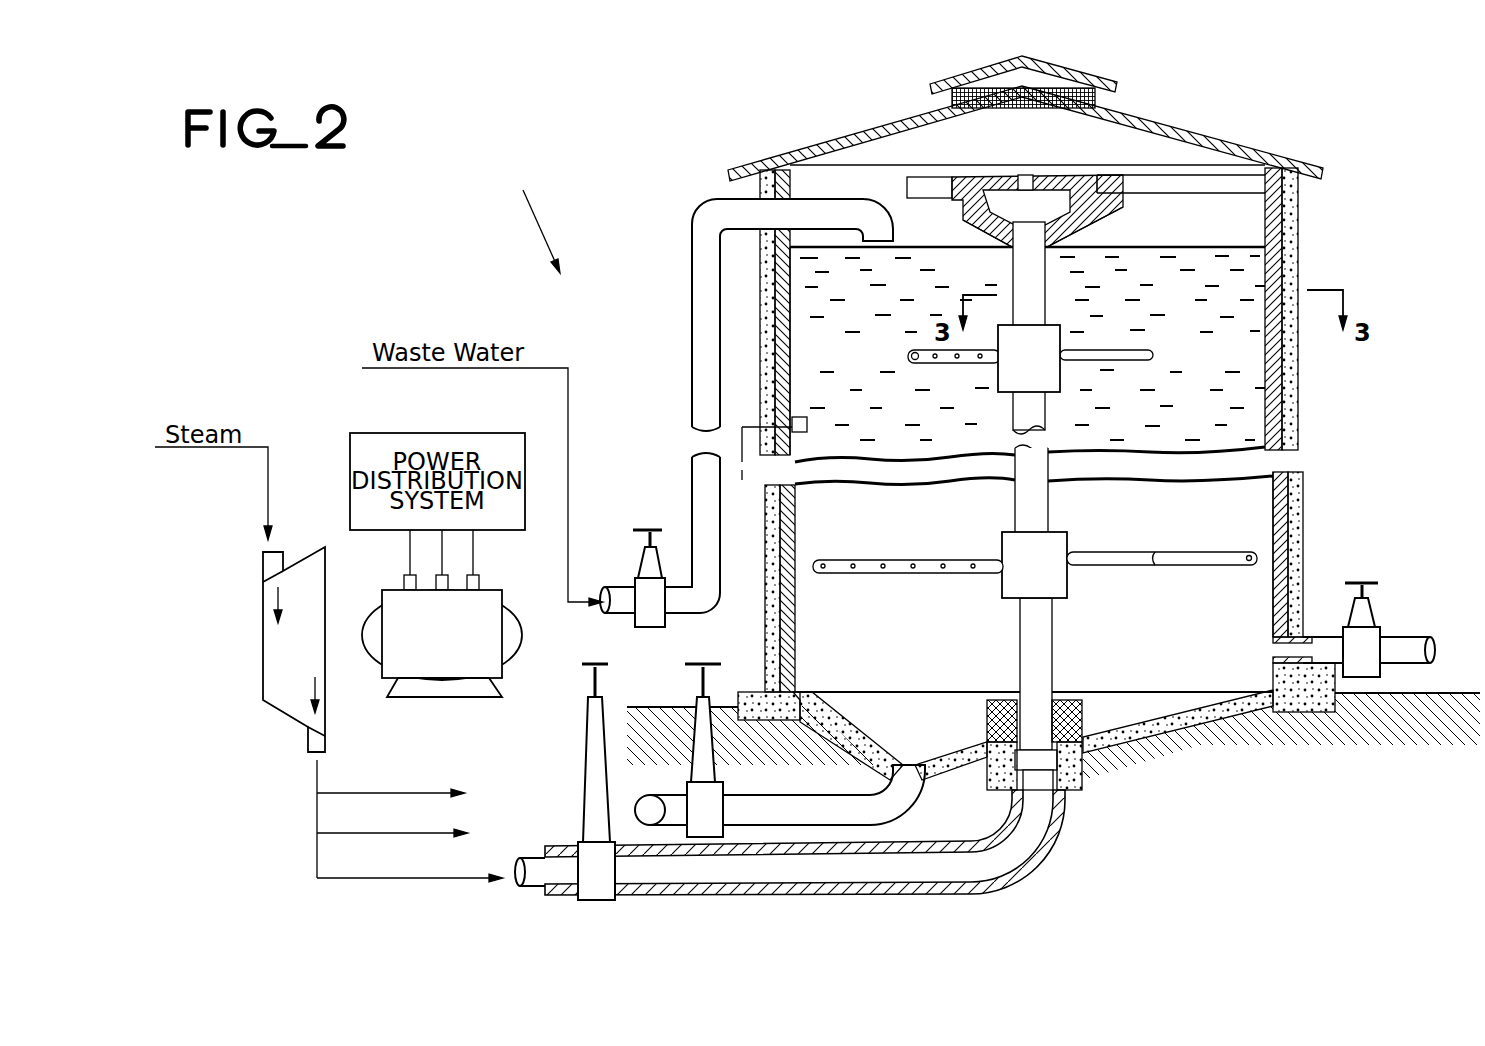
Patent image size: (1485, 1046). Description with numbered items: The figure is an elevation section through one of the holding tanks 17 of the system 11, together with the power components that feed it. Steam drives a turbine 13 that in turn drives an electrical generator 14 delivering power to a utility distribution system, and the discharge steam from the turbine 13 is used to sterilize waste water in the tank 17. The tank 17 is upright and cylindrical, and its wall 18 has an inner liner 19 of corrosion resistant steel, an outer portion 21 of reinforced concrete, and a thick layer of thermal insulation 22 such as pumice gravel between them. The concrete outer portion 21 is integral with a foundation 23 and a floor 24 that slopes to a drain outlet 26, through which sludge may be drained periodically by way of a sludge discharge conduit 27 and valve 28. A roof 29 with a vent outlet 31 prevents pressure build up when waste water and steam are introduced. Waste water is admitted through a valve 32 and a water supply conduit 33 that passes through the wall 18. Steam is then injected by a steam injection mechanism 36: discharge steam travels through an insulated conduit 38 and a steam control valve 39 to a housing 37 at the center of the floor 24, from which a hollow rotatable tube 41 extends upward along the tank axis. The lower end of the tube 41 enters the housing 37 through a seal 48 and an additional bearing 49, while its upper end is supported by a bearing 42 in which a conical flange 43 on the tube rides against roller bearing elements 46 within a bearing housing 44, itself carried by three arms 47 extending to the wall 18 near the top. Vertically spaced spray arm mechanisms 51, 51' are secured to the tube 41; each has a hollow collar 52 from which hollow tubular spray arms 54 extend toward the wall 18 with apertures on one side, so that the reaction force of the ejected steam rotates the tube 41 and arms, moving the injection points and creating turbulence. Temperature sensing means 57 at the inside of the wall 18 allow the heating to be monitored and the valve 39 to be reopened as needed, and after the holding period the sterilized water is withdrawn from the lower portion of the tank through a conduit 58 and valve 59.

The system 11 is at (537, 219).
The turbine 13 is at (263, 640).
The electrical generator 14 is at (446, 651).
The holding tank 17 is at (1040, 430).
The wall 18 is at (1298, 437).
The inner liner 19 is at (932, 250).
The outer portion 21 is at (1305, 515).
The thermal insulation 22 is at (1278, 505).
The foundation 23 is at (750, 692).
The floor 24 is at (1183, 733).
The drain outlet 26 is at (897, 767).
The sludge discharge conduit 27 is at (782, 793).
The valve 28 is at (723, 787).
The roof 29 is at (1243, 150).
The vent outlet 31 is at (950, 101).
The valve 32 is at (635, 578).
The water supply conduit 33 is at (697, 240).
The steam injection mechanism 36 is at (1094, 312).
The housing 37 is at (1059, 733).
The insulated conduit 38 is at (973, 845).
The steam control valve 39 is at (603, 842).
The hollow rotatable tube 41 is at (1040, 498).
The bearing 42 is at (1089, 232).
The conical flange 43 is at (1035, 210).
The bearing housing 44 is at (983, 227).
The roller bearing elements 46 is at (997, 212).
The arms 47 is at (934, 188).
The seal 48 is at (1083, 710).
The additional bearing 49 is at (988, 702).
The rotatable spray arm mechanism 51 is at (1030, 362).
The lower distribution arm 51' is at (1162, 586).
The hollow collar 52 is at (1068, 545).
The hollow tubular spray arms 54 is at (927, 573).
The temperature sensing means 57 is at (807, 424).
The conduit 58 is at (1412, 640).
The valve 59 is at (1383, 623).